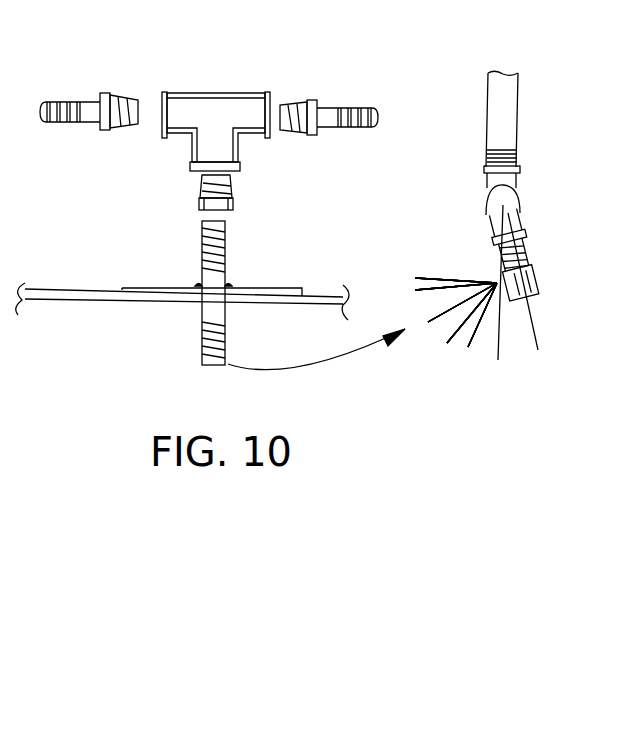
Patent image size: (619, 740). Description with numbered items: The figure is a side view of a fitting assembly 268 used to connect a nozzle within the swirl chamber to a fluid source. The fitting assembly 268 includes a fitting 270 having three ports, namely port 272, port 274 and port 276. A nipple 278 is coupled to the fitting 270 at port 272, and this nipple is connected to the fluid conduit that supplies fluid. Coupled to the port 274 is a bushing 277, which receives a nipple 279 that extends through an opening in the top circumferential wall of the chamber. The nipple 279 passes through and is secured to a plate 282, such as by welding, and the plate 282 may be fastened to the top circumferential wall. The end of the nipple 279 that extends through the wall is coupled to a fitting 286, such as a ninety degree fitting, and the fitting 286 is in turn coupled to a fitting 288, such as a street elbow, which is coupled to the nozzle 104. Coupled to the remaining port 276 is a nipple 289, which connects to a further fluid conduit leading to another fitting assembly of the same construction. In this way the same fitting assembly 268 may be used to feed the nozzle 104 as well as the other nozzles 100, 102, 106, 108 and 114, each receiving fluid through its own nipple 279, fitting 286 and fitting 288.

The fitting assembly 268 is at (370, 206).
The fitting 270 is at (228, 95).
The port 272 is at (162, 110).
The port 274 is at (239, 172).
The port 276 is at (271, 132).
The bushing 277 is at (201, 204).
The nipple 278 is at (82, 123).
The nipple 279 is at (202, 268).
The plate 282 is at (275, 290).
The fitting 286 is at (514, 180).
The fitting 288 is at (492, 212).
The nipple 289 is at (352, 108).
The nozzle 104 is at (540, 283).
The nozzle 100 is at (456, 312).
The nozzle 102 is at (456, 312).
The nozzle 106 is at (456, 312).
The nozzle 108 is at (456, 312).
The nozzle 114 is at (456, 312).